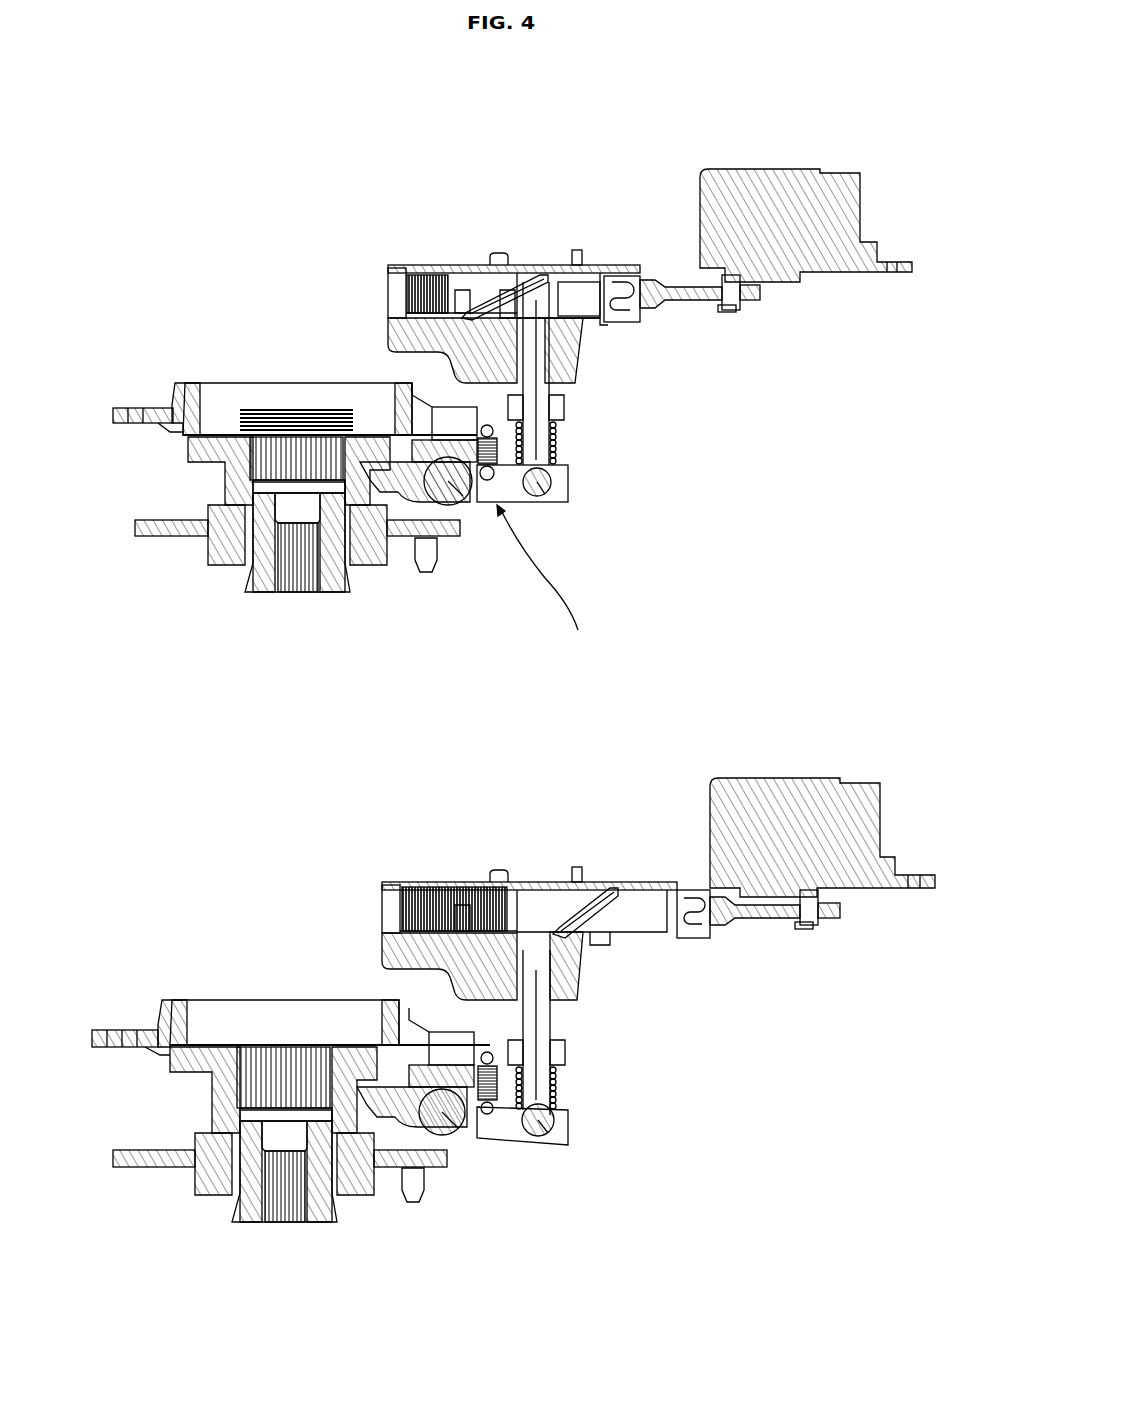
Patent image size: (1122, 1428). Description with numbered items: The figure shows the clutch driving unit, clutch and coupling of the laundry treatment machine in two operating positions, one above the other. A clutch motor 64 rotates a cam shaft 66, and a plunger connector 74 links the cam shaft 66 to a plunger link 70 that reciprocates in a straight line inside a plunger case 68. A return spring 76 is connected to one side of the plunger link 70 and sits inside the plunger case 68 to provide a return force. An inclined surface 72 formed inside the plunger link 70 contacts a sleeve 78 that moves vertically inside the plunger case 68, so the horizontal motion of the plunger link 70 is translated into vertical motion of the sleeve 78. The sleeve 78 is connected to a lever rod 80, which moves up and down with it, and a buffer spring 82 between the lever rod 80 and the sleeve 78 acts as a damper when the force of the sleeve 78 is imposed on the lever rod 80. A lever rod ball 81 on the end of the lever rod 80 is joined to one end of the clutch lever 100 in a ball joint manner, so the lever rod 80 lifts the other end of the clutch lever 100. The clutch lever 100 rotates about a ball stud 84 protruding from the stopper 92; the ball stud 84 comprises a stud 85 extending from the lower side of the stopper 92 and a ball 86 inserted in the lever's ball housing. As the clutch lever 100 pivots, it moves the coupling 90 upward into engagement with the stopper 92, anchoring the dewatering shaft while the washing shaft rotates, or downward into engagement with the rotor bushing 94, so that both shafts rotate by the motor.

The clutch motor 64 is at (720, 190).
The cam shaft 66 is at (735, 310).
The plunger case 68 is at (578, 358).
The plunger link 70 is at (592, 265).
The inclined surface 72 is at (512, 292).
The plunger connector 74 is at (650, 290).
The return spring 76 is at (420, 290).
The sleeve 78 is at (565, 408).
The lever rod 80 is at (550, 478).
The lever rod ball 81 is at (547, 498).
The buffer spring 82 is at (557, 432).
The ball stud 84 is at (547, 612).
The stud 85 is at (480, 500).
The ball 86 is at (458, 500).
The coupling 90 is at (240, 485).
The stopper 92 is at (165, 400).
The rotor bushing 94 is at (145, 540).
The clutch lever 100 is at (547, 576).